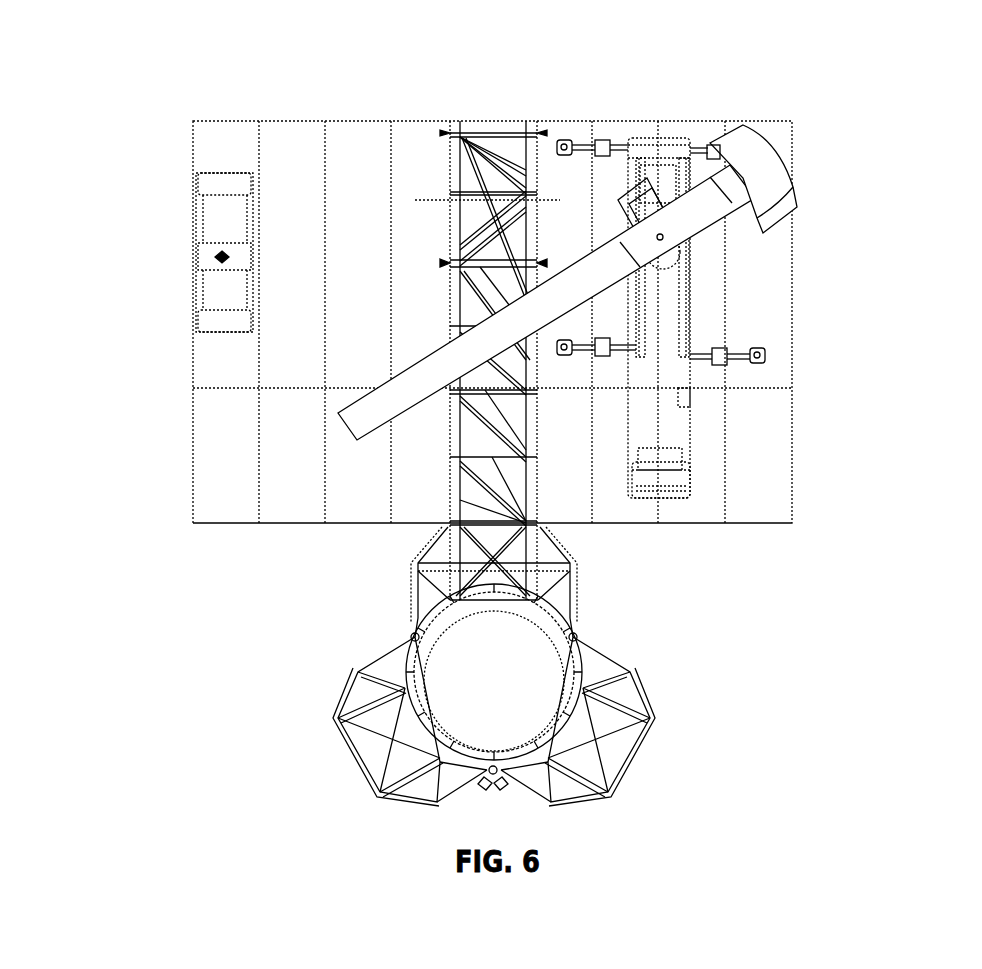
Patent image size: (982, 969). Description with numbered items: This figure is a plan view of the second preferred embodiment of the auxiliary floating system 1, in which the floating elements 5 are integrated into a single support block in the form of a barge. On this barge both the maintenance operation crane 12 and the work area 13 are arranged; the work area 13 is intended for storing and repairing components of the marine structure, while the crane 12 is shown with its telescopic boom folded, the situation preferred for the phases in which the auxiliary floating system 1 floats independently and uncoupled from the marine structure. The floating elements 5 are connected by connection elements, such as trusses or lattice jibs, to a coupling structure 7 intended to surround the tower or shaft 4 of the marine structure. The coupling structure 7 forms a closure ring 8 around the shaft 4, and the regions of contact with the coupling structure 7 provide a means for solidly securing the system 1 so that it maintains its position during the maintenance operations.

The auxiliary floating system 1 is at (155, 248).
The tower or shaft 4 is at (568, 672).
The floating element 5 is at (208, 423).
The coupling structure 7 is at (535, 480).
The closure ring 8 is at (413, 631).
The maintenance operation crane 12 is at (752, 172).
The work area 13 is at (285, 132).